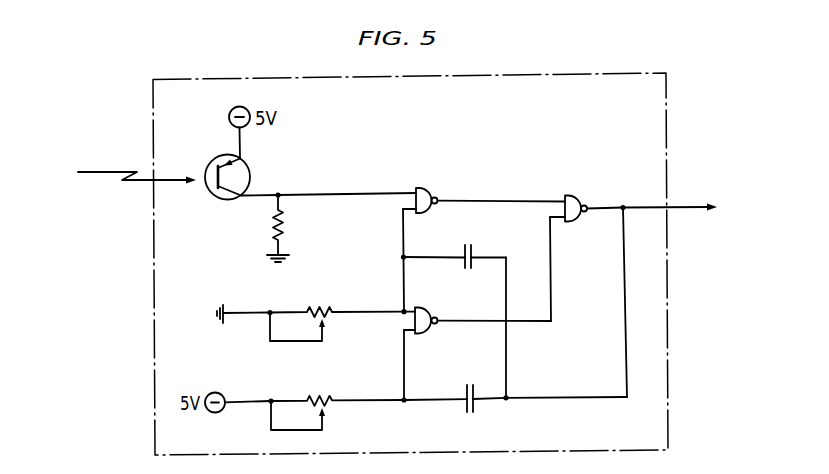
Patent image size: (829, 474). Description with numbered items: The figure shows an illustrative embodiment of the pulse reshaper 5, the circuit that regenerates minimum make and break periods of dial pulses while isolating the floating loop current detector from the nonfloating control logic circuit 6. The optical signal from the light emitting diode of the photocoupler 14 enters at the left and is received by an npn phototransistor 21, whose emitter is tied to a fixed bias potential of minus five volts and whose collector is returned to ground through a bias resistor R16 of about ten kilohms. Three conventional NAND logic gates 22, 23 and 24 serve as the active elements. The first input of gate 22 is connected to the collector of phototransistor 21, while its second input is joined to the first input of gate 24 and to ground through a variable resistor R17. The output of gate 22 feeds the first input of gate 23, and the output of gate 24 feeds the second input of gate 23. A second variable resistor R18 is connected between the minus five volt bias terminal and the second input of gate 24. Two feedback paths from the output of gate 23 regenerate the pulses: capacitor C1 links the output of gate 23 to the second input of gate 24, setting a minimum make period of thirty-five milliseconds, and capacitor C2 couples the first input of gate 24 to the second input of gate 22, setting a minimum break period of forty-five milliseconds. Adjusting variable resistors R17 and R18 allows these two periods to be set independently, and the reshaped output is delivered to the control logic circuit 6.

The pulse reshaper 5 is at (563, 123).
The photocoupler 14 is at (46, 215).
The control logic circuit 6 is at (801, 238).
The phototransistor 21 is at (236, 176).
The NAND gate 22 is at (423, 191).
The NAND gate 23 is at (570, 198).
The NAND gate 24 is at (425, 311).
The bias resistor R16 is at (290, 228).
The variable resistor R17 is at (316, 311).
The second variable resistor R18 is at (346, 400).
The capacitor C1 is at (544, 386).
The capacitor C2 is at (455, 244).